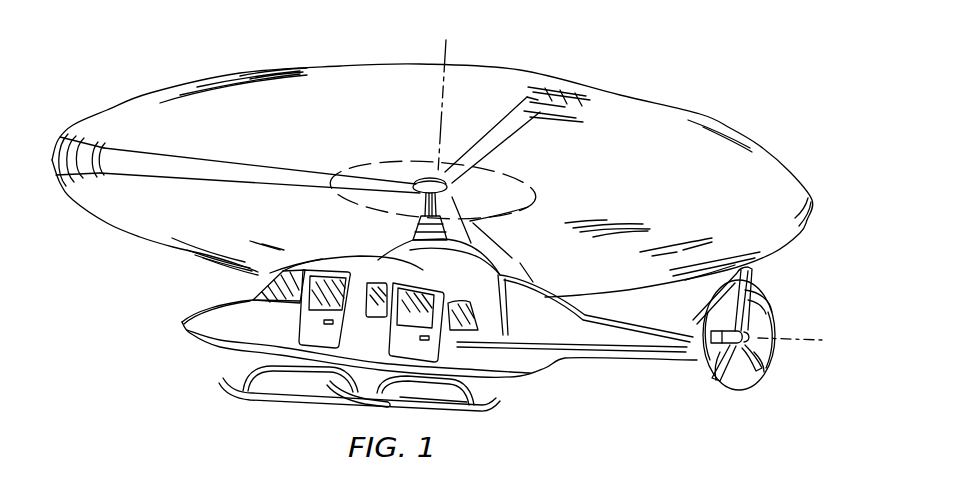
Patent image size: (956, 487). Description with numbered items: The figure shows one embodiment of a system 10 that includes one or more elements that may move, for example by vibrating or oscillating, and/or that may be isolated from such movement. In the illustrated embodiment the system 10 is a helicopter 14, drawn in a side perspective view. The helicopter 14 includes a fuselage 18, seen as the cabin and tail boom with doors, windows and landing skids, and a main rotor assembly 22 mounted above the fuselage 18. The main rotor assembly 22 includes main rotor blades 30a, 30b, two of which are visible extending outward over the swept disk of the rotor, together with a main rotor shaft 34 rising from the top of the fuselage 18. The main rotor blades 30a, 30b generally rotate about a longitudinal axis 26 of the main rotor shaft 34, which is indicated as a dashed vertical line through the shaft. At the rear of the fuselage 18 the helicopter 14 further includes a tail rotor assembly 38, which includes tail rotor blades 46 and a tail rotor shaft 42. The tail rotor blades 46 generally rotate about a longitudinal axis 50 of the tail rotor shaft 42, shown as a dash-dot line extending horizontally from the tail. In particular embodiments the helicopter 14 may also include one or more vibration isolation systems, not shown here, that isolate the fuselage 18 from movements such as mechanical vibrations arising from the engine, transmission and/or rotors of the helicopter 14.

The system 10 is at (594, 60).
The helicopter 14 is at (529, 377).
The fuselage 18 is at (212, 343).
The main rotor assembly 22 is at (488, 227).
The longitudinal axis 26 is at (438, 108).
The main rotor blade 30a is at (186, 158).
The main rotor blade 30b is at (521, 142).
The main rotor shaft 34 is at (420, 208).
The tail rotor assembly 38 is at (758, 396).
The tail rotor shaft 42 is at (724, 380).
The tail rotor blades 46 is at (770, 312).
The longitudinal axis 50 is at (806, 348).